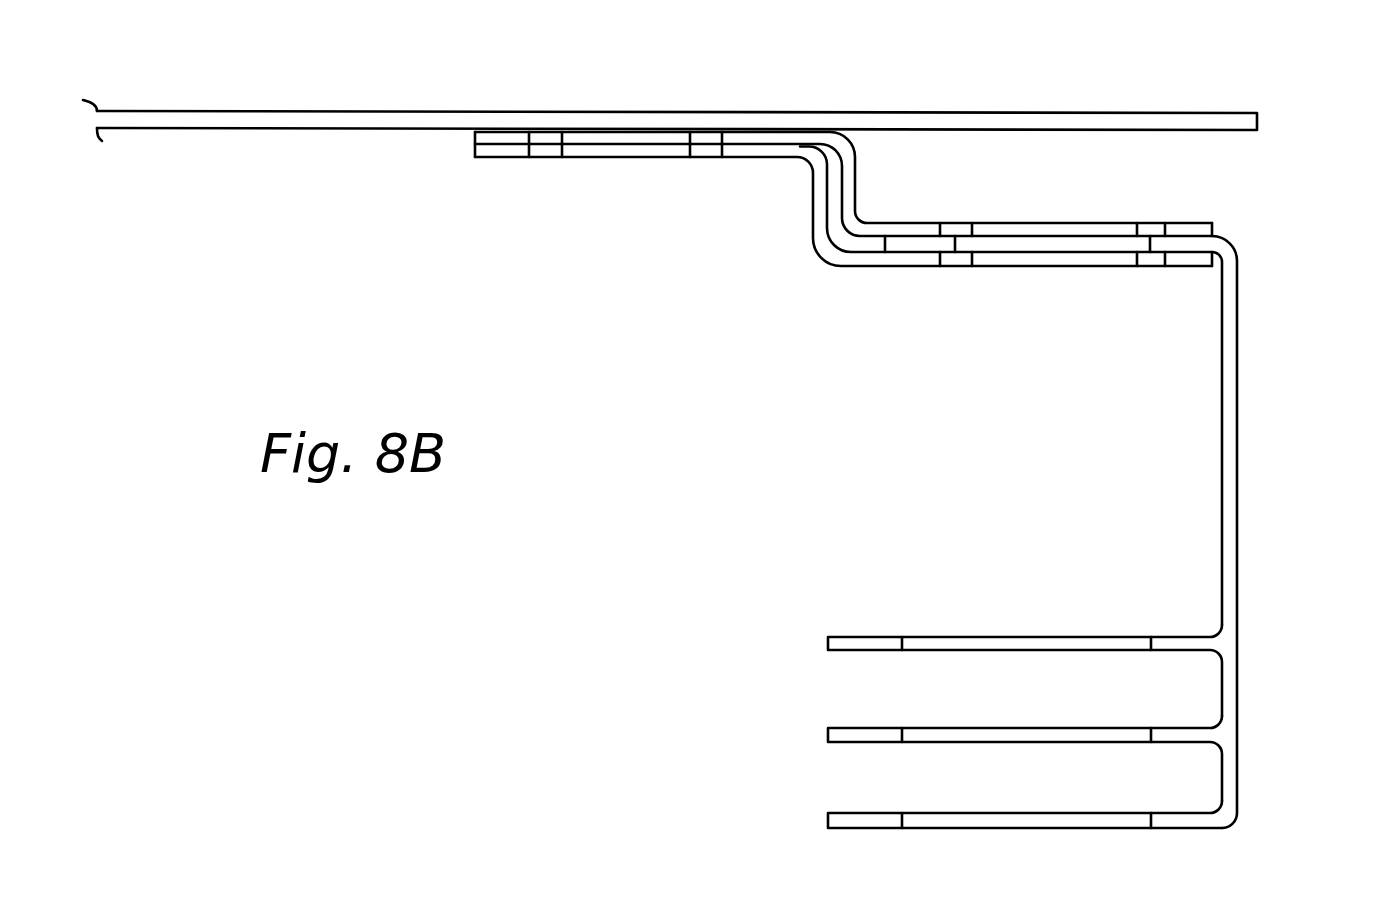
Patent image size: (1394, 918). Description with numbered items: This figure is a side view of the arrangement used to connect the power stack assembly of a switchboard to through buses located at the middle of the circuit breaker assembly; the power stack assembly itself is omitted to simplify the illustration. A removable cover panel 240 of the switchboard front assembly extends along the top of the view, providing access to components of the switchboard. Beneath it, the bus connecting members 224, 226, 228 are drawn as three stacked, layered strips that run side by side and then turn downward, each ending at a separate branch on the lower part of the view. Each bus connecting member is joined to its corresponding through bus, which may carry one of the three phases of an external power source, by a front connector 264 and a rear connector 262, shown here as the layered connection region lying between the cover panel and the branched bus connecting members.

The removable cover panel 240 is at (1185, 112).
The rear connector 262 is at (1188, 220).
The front connector 264 is at (1058, 268).
The bus connecting member 228 is at (828, 644).
The bus connecting member 226 is at (828, 736).
The bus connecting member 224 is at (828, 821).